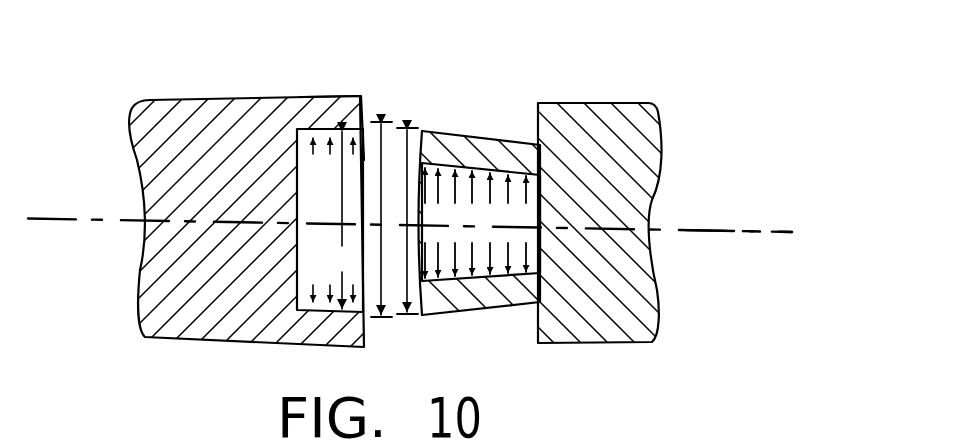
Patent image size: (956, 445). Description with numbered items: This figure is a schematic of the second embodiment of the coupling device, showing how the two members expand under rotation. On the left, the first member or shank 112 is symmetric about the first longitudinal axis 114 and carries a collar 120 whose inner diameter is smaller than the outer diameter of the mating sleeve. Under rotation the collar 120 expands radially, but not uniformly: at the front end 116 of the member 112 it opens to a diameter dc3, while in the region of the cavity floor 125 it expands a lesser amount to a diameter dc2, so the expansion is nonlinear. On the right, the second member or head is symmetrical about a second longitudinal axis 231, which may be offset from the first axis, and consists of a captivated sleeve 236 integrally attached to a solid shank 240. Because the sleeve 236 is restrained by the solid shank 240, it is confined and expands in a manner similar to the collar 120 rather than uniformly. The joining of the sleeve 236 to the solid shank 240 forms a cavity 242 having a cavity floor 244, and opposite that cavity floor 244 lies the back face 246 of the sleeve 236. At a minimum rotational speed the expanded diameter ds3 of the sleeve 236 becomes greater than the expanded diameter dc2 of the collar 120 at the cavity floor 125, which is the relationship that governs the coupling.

The first member or shank 112 is at (230, 99).
The first longitudinal axis 114 is at (62, 218).
The front end 116 is at (365, 107).
The collar 120 is at (336, 97).
The cavity floor 125 is at (298, 190).
The expanded diameter of the collar at the cavity floor dc2 is at (335, 220).
The expanded diameter of the collar at the front end dc3 is at (382, 173).
The expanded diameter of the sleeve ds3 is at (404, 277).
The captivated sleeve 236 is at (483, 138).
The solid shank 240 is at (571, 103).
The cavity 242 is at (507, 218).
The cavity floor 244 is at (540, 217).
The back face 246 is at (418, 130).
The second longitudinal axis 231 is at (714, 232).